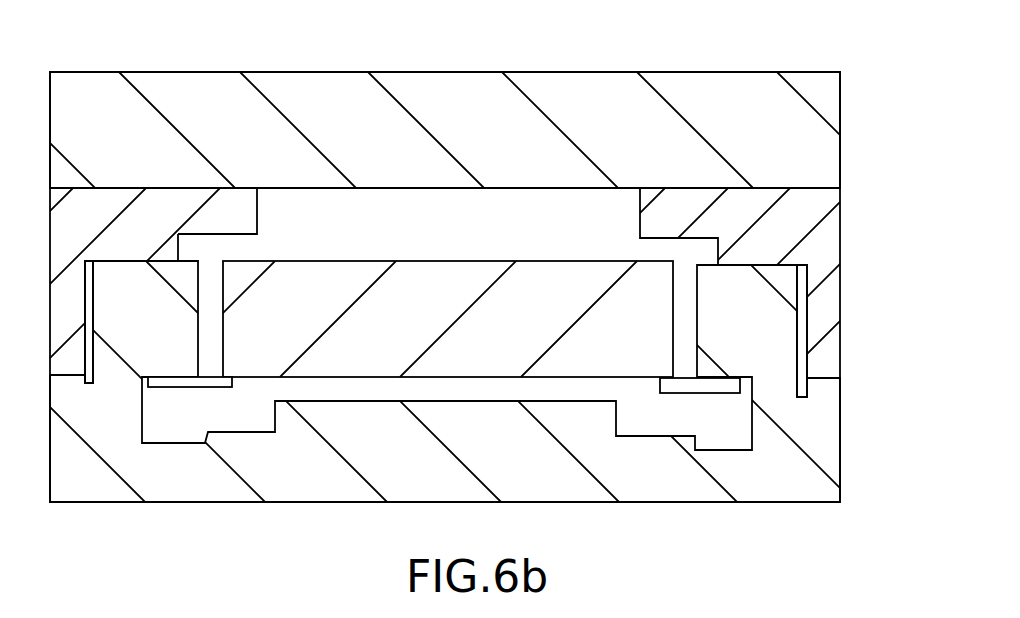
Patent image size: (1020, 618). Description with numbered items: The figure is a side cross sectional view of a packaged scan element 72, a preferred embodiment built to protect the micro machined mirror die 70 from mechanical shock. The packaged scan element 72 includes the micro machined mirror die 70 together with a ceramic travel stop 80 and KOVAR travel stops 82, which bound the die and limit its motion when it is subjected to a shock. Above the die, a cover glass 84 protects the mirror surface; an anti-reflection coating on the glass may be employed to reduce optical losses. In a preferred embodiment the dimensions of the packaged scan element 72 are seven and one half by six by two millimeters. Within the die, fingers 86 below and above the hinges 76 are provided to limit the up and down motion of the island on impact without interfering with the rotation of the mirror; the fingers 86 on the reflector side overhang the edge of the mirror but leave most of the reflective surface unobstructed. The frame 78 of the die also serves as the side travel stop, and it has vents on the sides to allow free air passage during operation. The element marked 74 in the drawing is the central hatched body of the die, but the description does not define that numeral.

The micro machined mirror die 70 is at (765, 310).
The packaged scan element 72 is at (565, 66).
The movable member 74 is at (442, 331).
The hinges 76 is at (178, 388).
The frame 78 is at (748, 288).
The ceramic travel stop 80 is at (503, 423).
The KOVAR travel stops 82 is at (64, 216).
The cover glass 84 is at (343, 93).
The fingers 86 is at (247, 215).